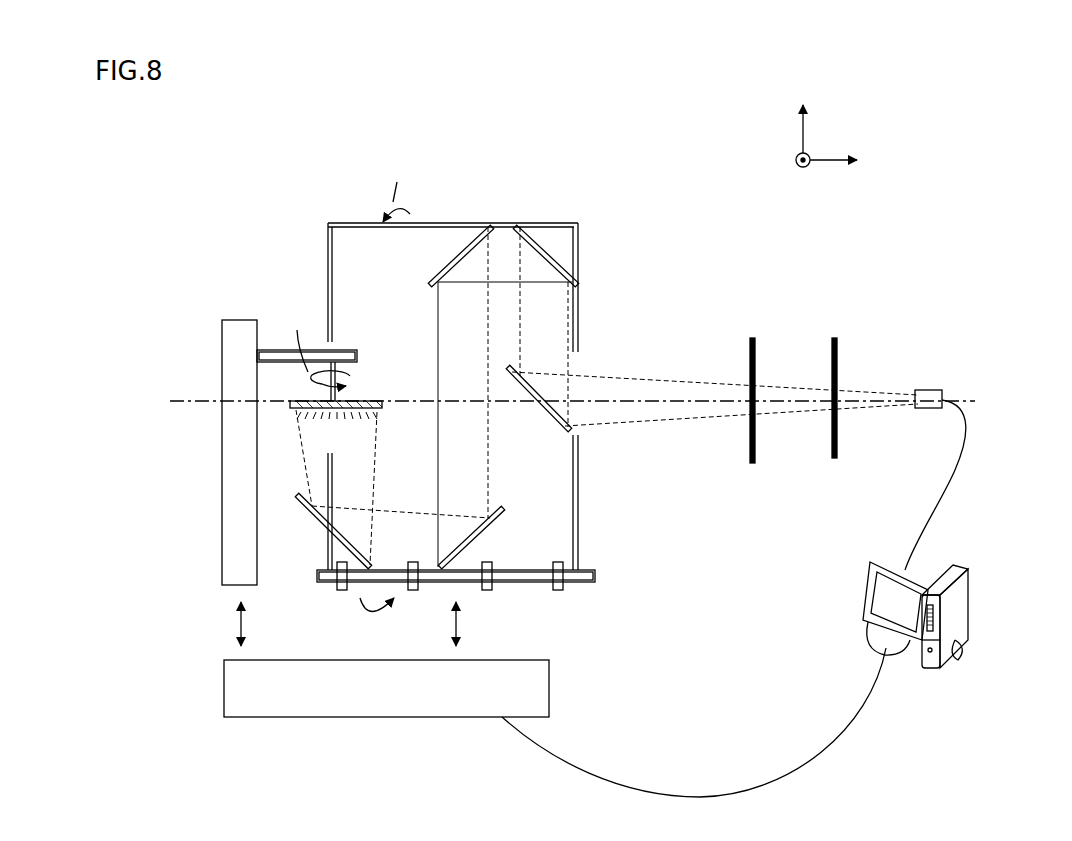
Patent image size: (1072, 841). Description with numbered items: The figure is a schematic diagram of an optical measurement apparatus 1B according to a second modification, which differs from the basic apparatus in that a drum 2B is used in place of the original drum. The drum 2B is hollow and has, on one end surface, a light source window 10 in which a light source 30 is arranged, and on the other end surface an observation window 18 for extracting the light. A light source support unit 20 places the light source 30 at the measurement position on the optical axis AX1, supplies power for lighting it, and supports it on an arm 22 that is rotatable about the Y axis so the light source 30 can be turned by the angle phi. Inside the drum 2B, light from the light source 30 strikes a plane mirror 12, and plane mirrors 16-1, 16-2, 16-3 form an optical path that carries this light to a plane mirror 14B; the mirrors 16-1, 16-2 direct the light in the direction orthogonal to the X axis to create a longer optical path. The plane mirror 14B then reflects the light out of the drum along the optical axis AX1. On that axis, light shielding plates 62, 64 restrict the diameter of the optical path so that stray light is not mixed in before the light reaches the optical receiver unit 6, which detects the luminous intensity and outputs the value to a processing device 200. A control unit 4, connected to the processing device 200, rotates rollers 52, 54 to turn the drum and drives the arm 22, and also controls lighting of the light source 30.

The optical measurement apparatus 1B is at (967, 223).
The drum 2B is at (354, 235).
The control unit 4 is at (258, 718).
The optical receiver unit 6 is at (931, 389).
The light source window 10 is at (343, 346).
The plane mirror 12 is at (312, 530).
The plane mirror 14B is at (570, 412).
The plane mirror 16-1 is at (492, 544).
The plane mirror 16-2 is at (466, 242).
The plane mirror 16-3 is at (540, 242).
The observation window 18 is at (493, 376).
The light source support unit 20 is at (242, 325).
The arm 22 is at (342, 372).
The light source 30 is at (304, 400).
The roller 52 is at (488, 587).
The roller 54 is at (580, 583).
The light shielding plate 62 is at (754, 350).
The light shielding plate 64 is at (836, 350).
The processing device 200 is at (972, 622).
The optical axis AX1 is at (594, 402).